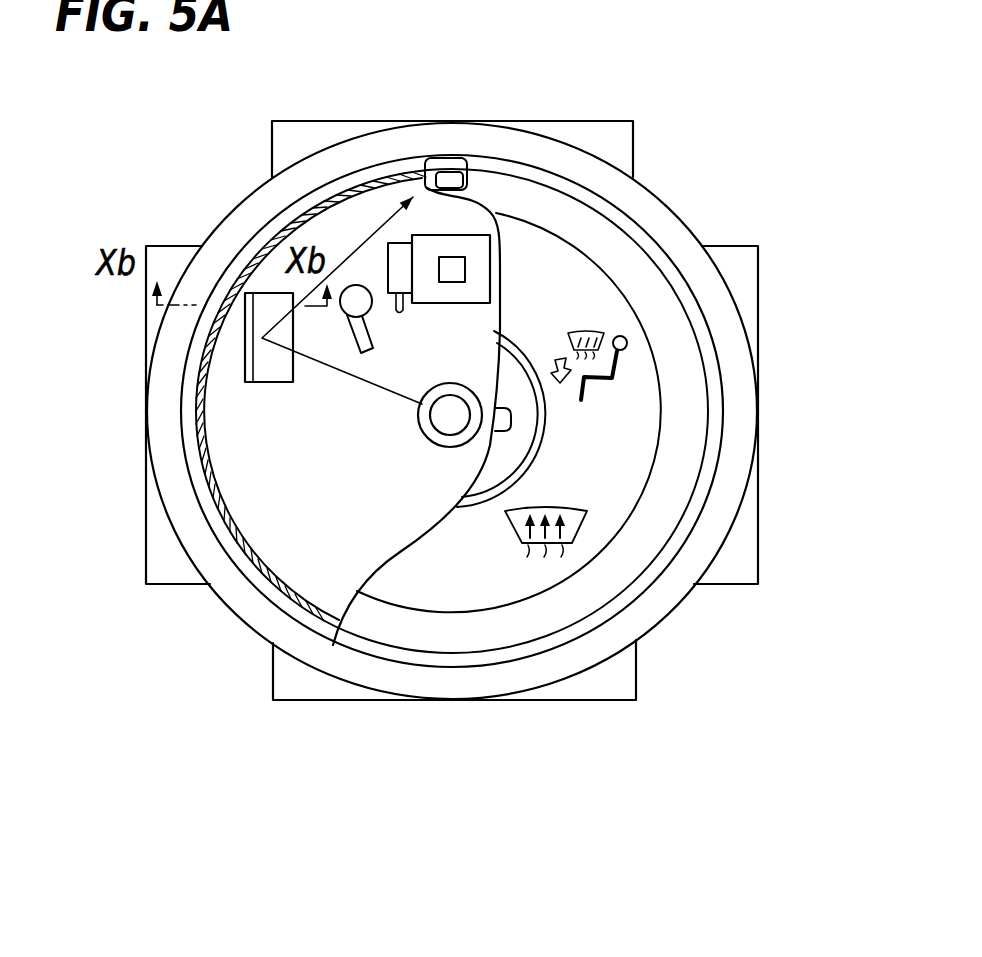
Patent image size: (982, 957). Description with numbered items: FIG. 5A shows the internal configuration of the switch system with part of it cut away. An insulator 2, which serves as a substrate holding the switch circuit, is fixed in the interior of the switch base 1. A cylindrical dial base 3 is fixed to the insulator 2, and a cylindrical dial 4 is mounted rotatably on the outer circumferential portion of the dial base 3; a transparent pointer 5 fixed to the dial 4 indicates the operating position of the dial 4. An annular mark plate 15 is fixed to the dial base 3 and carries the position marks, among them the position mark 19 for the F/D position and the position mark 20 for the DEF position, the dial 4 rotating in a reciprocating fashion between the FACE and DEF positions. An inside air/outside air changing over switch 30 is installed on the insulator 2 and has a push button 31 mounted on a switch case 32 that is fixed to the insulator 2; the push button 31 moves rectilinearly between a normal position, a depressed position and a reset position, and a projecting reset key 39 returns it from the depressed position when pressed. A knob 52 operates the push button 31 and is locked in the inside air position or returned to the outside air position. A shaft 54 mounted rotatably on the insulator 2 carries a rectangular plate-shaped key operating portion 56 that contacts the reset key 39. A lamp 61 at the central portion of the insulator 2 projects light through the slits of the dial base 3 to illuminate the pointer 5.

The switch base 1 is at (601, 120).
The insulator 2 is at (253, 513).
The dial base 3 is at (198, 413).
The dial 4 is at (708, 348).
The pointer 5 is at (453, 173).
The mark plate 15 is at (593, 291).
The position mark 19 is at (627, 365).
The position mark 20 is at (578, 503).
The inside air/outside air changing over switch 30 is at (500, 288).
The push button 31 is at (466, 266).
The switch case 32 is at (450, 235).
The reset key 39 is at (400, 313).
The knob 52 is at (523, 427).
The shaft 54 is at (340, 308).
The key operating portion 56 is at (372, 348).
The lamp 61 is at (428, 432).